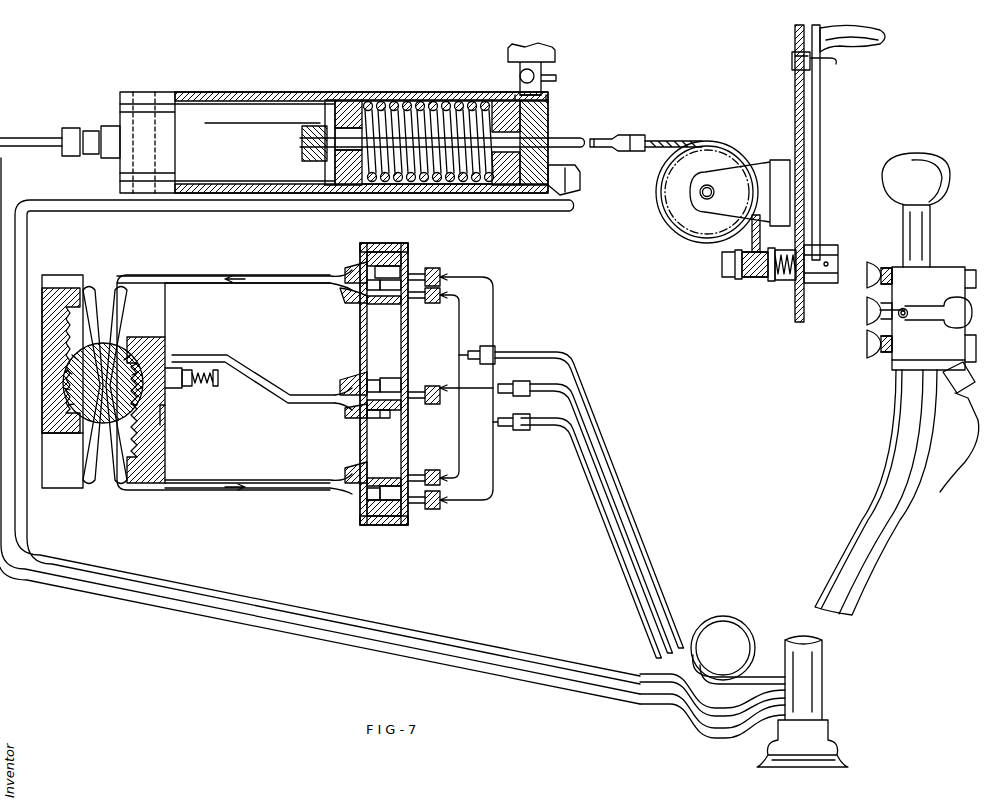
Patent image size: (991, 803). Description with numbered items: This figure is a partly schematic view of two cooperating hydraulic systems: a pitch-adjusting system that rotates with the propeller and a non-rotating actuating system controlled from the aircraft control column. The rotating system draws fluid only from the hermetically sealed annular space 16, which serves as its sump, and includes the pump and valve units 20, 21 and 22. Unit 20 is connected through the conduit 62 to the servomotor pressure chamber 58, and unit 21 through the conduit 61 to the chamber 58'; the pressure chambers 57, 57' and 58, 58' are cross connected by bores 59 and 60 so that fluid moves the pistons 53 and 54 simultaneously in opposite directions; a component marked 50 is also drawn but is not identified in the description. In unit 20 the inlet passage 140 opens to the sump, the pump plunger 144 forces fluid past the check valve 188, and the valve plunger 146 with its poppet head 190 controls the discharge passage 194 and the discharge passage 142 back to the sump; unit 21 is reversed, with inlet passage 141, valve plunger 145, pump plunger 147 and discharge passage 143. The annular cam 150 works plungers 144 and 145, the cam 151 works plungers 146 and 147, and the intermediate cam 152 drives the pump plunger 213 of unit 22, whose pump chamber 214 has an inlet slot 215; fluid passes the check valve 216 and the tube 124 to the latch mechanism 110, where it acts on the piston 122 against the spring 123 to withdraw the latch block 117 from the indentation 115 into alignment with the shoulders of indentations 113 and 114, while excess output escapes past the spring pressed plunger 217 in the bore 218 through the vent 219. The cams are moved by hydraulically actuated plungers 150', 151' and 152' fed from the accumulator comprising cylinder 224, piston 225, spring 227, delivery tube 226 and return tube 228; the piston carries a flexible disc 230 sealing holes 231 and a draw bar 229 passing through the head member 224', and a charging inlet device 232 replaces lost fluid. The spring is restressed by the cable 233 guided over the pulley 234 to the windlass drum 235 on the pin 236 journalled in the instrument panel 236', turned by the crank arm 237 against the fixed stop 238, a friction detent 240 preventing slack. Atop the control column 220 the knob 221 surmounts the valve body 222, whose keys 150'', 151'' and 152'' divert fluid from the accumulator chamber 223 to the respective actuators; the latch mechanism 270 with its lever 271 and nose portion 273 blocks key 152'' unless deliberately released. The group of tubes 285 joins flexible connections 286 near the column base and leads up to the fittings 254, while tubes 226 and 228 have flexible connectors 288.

The annular space 16 is at (382, 242).
The pump and valve unit 20 is at (419, 272).
The pump and valve unit 21 is at (341, 461).
The pump and valve unit 22 is at (341, 370).
The threaded spindle 50 is at (102, 374).
The piston 53 is at (45, 405).
The piston 54 is at (167, 470).
The pressure chamber 57 is at (62, 371).
The pressure chamber 57' is at (62, 454).
The pressure chamber 58 is at (223, 382).
The pressure chamber 58' is at (145, 501).
The bore 59 is at (94, 288).
The bore 60 is at (112, 288).
The conduit 61 is at (248, 491).
The conduit 62 is at (250, 276).
The latch mechanism 110 is at (198, 392).
The indentation 113 is at (167, 442).
The indentation 114 is at (174, 366).
The indentation 115 is at (168, 430).
The latch block 117 is at (192, 372).
The piston part 122 is at (186, 390).
The spring 123 is at (210, 387).
The tube 124 is at (252, 368).
The inlet passage 140 is at (398, 254).
The inlet passage 141 is at (396, 476).
The discharge passage 142 is at (385, 305).
The discharge passage 143 is at (382, 518).
The pump plunger 144 is at (390, 270).
The valve plunger 145 is at (396, 526).
The valve plunger 146 is at (412, 293).
The pump plunger 147 is at (400, 482).
The annular cam 150 is at (463, 383).
The hydraulically actuated plunger 150' is at (516, 431).
The key 150'' is at (865, 347).
The annular cam 151 is at (456, 382).
The hydraulically actuated plunger 151' is at (492, 347).
The key 151'' is at (865, 282).
The annular cam 152 is at (429, 400).
The hydraulically actuated plunger 152' is at (493, 379).
The key 152'' is at (865, 311).
The check valve 188 is at (350, 272).
The poppet type head 190 is at (365, 300).
The discharge passage 194 is at (340, 292).
The pump plunger 213 is at (402, 385).
The pump chamber 214 is at (370, 378).
The inlet slot 215 is at (394, 378).
The check valve 216 is at (340, 381).
The spring pressed plunger 217 is at (345, 414).
The bore 218 is at (404, 408).
The vent 219 is at (372, 420).
The control column 220 is at (822, 640).
The control knob 221 is at (914, 162).
The valve body 222 is at (934, 318).
The accumulator chamber 223 is at (262, 132).
The cylinder 224 is at (334, 128).
The head member 224' is at (555, 96).
The piston 225 is at (386, 100).
The delivery tube 226 is at (28, 138).
The spring 227 is at (432, 100).
The tube 228 is at (522, 205).
The draw bar 229 is at (585, 140).
The flexible disc 230 is at (338, 102).
The holes 231 is at (356, 100).
The charging inlet device 232 is at (557, 58).
The cable 233 is at (660, 140).
The pulley 234 is at (660, 205).
The windlass drum 235 is at (755, 280).
The pin 236 is at (830, 255).
The instrument panel 236' is at (774, 180).
The crank arm 237 is at (821, 137).
The fixed stop 238 is at (836, 64).
The friction detent mechanism 240 is at (795, 280).
The fittings 254 is at (940, 385).
The latch mechanism 270 is at (903, 318).
The lever 271 is at (938, 312).
The nose portion 273 is at (898, 316).
The group of tubes 285 is at (656, 634).
The high pressure flexible connections 286 is at (758, 605).
The high pressure flexible connectors 288 is at (688, 718).